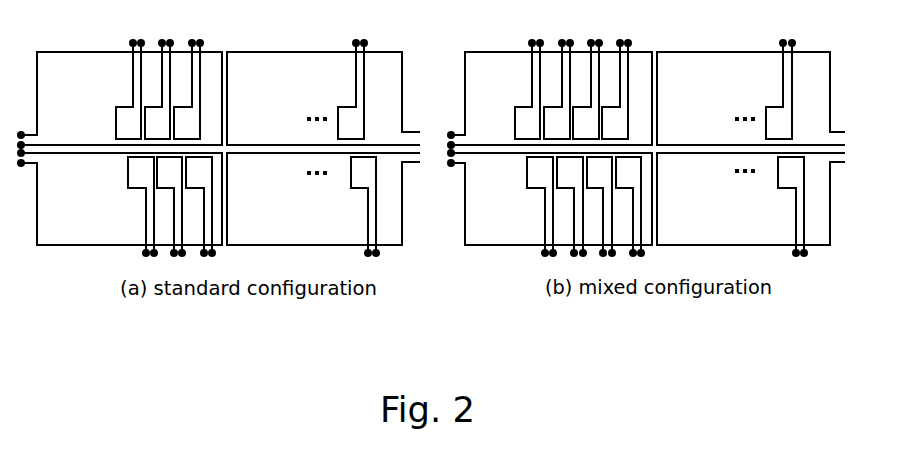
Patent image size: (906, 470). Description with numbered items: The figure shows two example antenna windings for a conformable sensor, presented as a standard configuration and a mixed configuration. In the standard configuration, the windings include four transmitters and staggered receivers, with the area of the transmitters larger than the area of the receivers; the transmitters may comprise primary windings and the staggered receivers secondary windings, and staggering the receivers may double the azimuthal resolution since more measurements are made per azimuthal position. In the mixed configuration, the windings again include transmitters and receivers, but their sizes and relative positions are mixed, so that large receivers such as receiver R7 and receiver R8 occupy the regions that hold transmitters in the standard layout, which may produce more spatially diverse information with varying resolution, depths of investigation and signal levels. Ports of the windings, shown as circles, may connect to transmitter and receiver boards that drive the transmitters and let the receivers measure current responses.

The receiver R7 is at (751, 98).
The receiver R8 is at (751, 199).